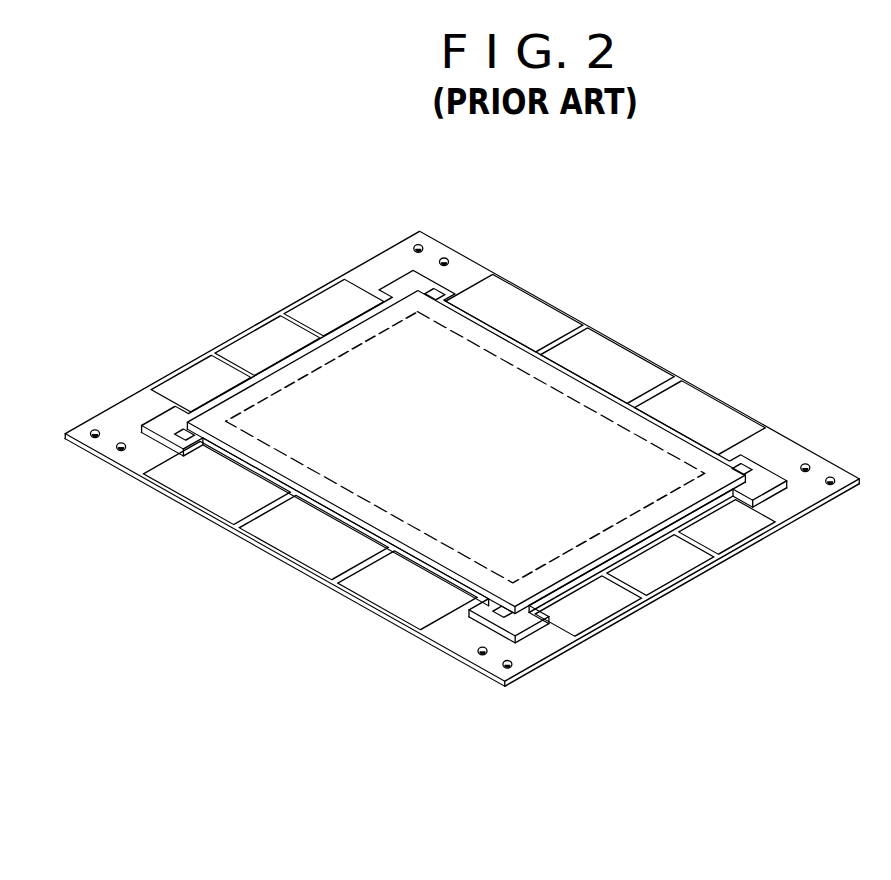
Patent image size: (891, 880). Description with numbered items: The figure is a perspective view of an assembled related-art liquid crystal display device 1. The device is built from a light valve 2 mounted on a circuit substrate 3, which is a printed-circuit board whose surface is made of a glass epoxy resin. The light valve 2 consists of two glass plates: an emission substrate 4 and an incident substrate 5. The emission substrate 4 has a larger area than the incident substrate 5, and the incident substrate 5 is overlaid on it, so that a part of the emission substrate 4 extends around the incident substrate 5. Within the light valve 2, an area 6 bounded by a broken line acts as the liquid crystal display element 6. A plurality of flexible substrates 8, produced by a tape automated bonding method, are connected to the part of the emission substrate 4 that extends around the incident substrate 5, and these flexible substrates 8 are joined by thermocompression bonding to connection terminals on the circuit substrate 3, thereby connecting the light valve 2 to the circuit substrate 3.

The liquid crystal display device 1 is at (678, 136).
The light valve 2 is at (603, 388).
The circuit substrate 3 is at (808, 513).
The emission substrate 4 is at (760, 482).
The incident substrate 5 is at (663, 435).
The liquid crystal display element 6 is at (477, 410).
The flexible substrates 8 is at (327, 302).